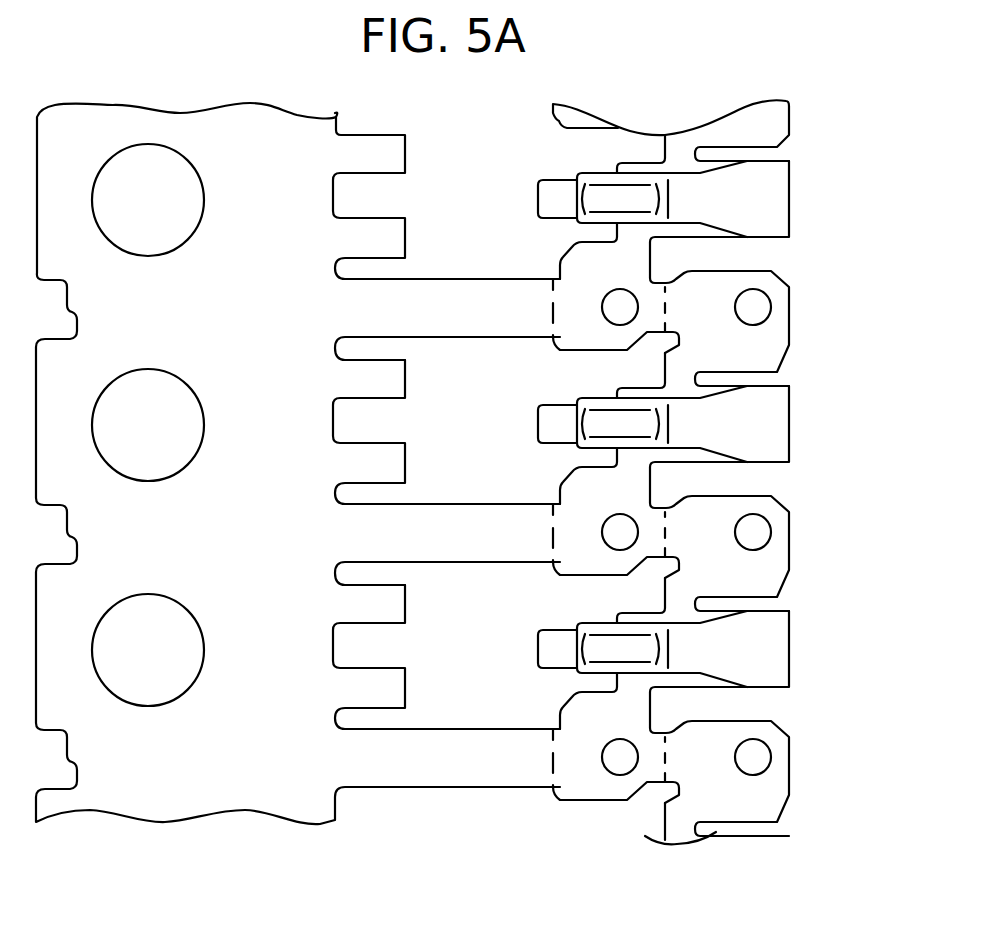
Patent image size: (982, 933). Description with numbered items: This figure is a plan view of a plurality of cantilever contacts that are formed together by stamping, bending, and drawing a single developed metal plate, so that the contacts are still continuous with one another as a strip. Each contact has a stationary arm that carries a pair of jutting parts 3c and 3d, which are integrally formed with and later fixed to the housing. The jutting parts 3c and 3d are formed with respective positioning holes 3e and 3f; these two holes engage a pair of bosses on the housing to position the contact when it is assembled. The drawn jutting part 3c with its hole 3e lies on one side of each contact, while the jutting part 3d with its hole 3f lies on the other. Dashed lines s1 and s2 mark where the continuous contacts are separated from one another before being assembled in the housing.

The jutting part 3c is at (762, 357).
The jutting part 3d is at (548, 190).
The positioning hole 3e is at (765, 300).
The positioning hole 3f is at (620, 318).
The line s1 is at (667, 508).
The line s2 is at (553, 290).